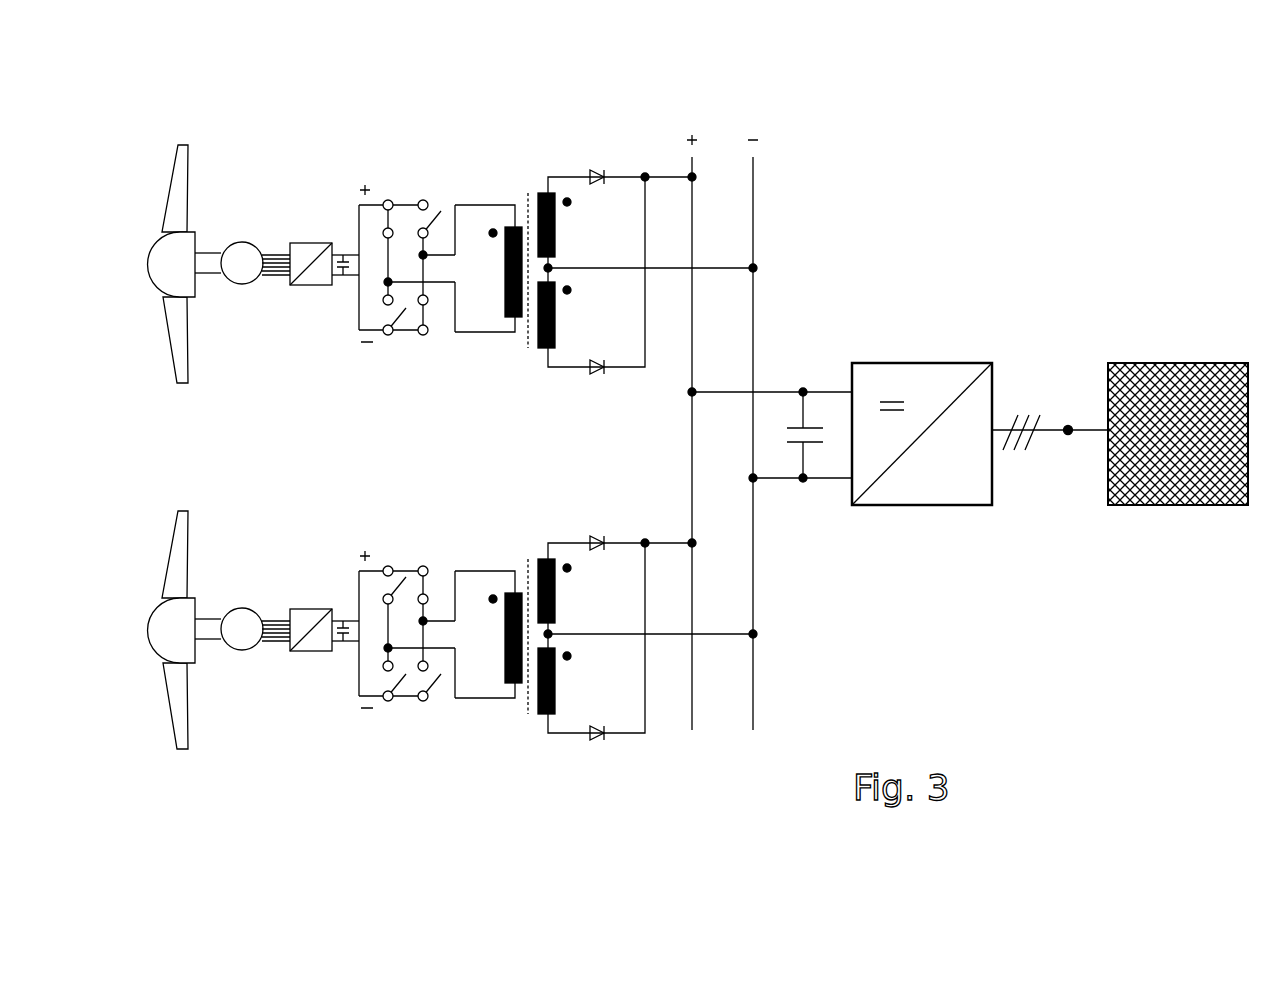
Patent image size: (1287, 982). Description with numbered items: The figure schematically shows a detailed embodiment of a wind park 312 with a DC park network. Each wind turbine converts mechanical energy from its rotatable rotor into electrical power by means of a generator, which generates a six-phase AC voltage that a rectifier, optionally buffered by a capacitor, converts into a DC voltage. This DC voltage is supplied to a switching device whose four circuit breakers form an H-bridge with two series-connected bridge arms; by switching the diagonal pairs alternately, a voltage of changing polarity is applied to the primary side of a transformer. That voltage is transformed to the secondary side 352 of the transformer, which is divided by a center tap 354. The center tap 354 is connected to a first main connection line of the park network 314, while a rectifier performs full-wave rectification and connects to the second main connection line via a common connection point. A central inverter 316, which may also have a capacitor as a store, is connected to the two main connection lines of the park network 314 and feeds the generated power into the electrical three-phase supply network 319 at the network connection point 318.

The wind park 312 is at (917, 149).
The park network 314 is at (721, 150).
The central inverter 316 is at (921, 362).
The network connection point 318 is at (1068, 436).
The electrical three-phase supply network 319 is at (1150, 362).
The secondary side 352 is at (534, 359).
The center tap 354 is at (550, 267).